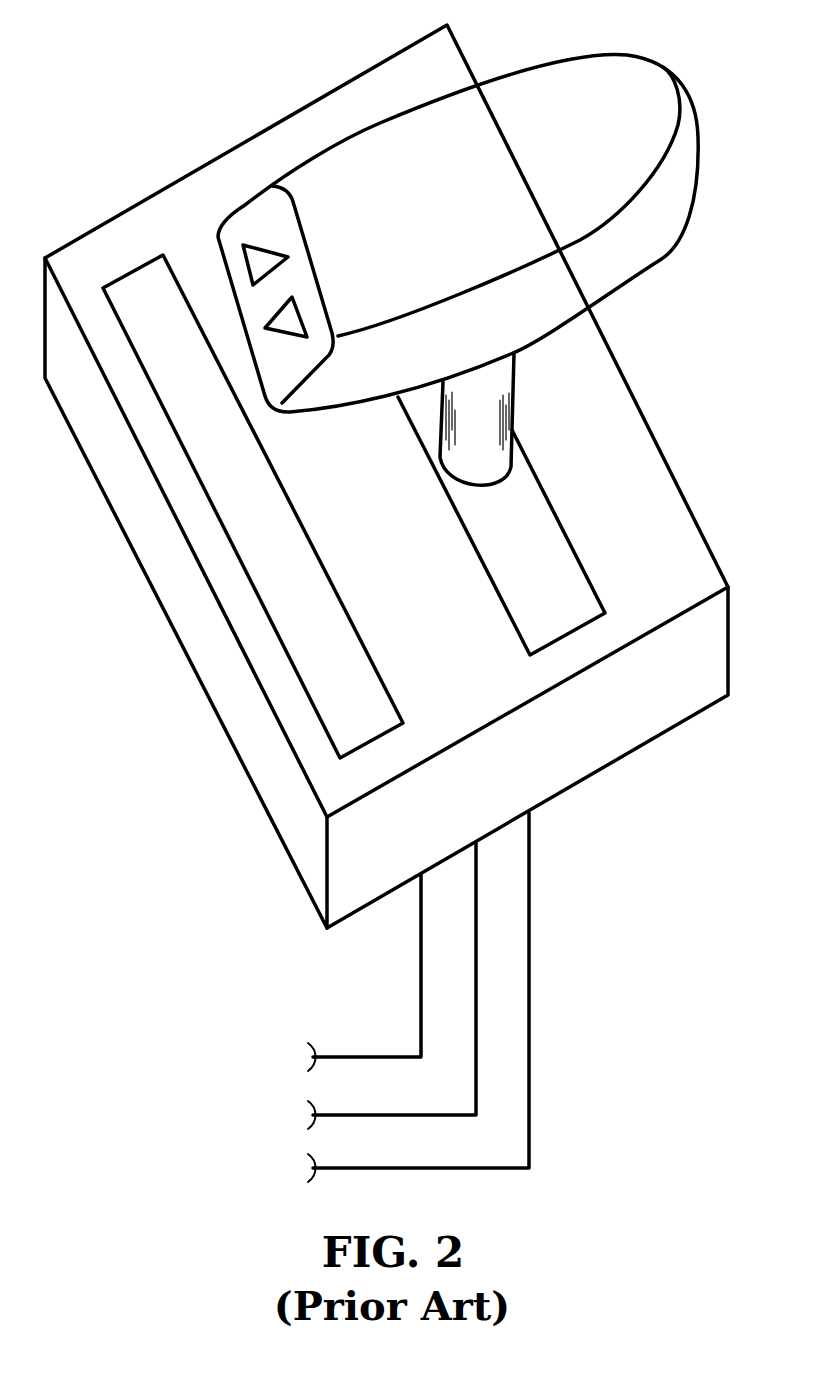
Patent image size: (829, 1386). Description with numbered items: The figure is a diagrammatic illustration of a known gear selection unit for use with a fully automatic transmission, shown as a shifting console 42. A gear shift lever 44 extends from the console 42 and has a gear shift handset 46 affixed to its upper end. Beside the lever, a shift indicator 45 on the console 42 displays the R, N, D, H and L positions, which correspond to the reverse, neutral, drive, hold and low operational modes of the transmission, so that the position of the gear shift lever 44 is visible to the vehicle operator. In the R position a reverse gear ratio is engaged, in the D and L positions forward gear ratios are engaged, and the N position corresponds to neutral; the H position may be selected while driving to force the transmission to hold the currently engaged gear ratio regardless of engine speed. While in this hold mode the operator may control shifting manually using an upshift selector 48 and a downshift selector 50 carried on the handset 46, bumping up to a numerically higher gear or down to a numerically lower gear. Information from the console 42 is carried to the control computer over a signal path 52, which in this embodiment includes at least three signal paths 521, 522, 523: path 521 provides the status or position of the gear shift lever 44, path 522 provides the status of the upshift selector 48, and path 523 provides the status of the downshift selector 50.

The shifting console 42 is at (339, 80).
The gear shift lever 44 is at (515, 377).
The shift indicator 45 is at (312, 538).
The gear shift handset 46 is at (547, 67).
The upshift selector 48 is at (281, 257).
The downshift selector 50 is at (301, 303).
The signal path 52 is at (467, 997).
The signal path 521 is at (421, 1003).
The signal path 522 is at (477, 940).
The signal path 523 is at (530, 1093).